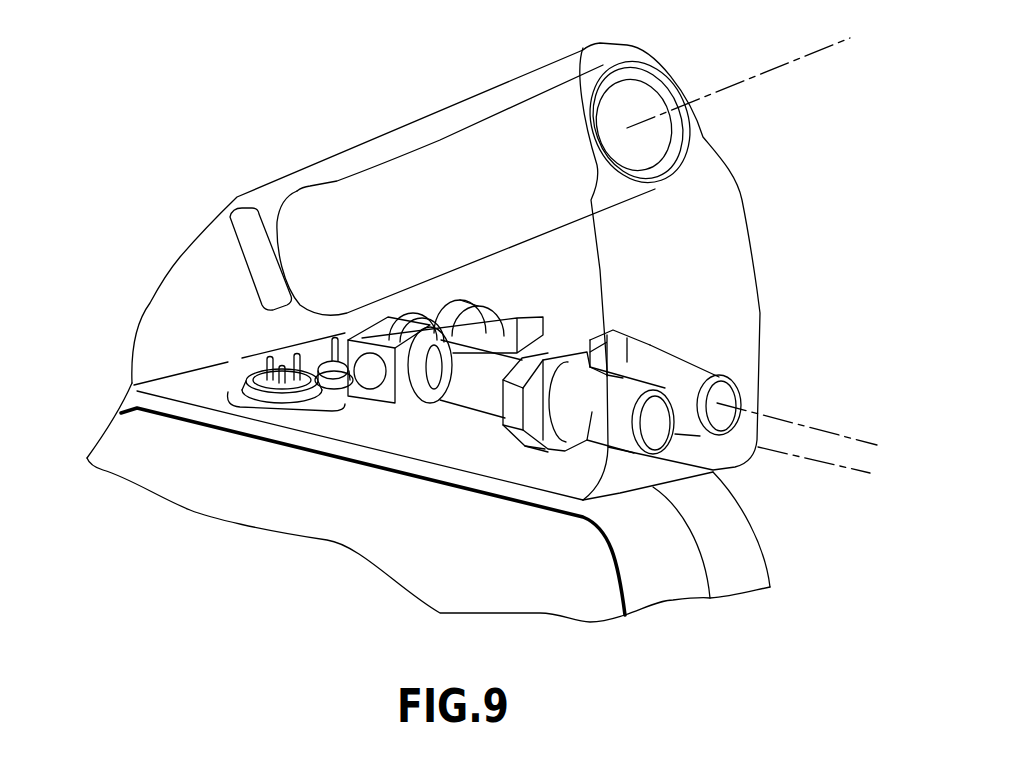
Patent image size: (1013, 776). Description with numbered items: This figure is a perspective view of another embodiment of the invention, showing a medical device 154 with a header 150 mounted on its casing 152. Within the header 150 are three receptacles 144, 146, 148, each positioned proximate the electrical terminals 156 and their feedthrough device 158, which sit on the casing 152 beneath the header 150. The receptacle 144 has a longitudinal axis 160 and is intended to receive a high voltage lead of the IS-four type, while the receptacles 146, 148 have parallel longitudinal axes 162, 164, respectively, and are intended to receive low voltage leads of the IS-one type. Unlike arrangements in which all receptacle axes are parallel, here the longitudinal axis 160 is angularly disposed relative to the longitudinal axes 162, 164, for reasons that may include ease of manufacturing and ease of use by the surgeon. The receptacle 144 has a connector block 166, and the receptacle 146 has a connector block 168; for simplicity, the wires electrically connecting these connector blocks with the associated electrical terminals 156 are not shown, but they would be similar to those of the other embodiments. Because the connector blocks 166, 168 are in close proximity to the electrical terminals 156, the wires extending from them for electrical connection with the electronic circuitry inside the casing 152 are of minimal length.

The receptacle 144 is at (448, 168).
The receptacle 146 is at (675, 362).
The receptacle 148 is at (650, 362).
The header 150 is at (213, 257).
The casing 152 is at (104, 432).
The medical device 154 is at (128, 237).
The electrical terminals 156 is at (268, 372).
The feedthrough device 158 is at (330, 405).
The longitudinal axis 160 is at (733, 85).
The longitudinal axis 162 is at (778, 417).
The longitudinal axis 164 is at (758, 447).
The connector block 166 is at (252, 240).
The connector block 168 is at (327, 540).